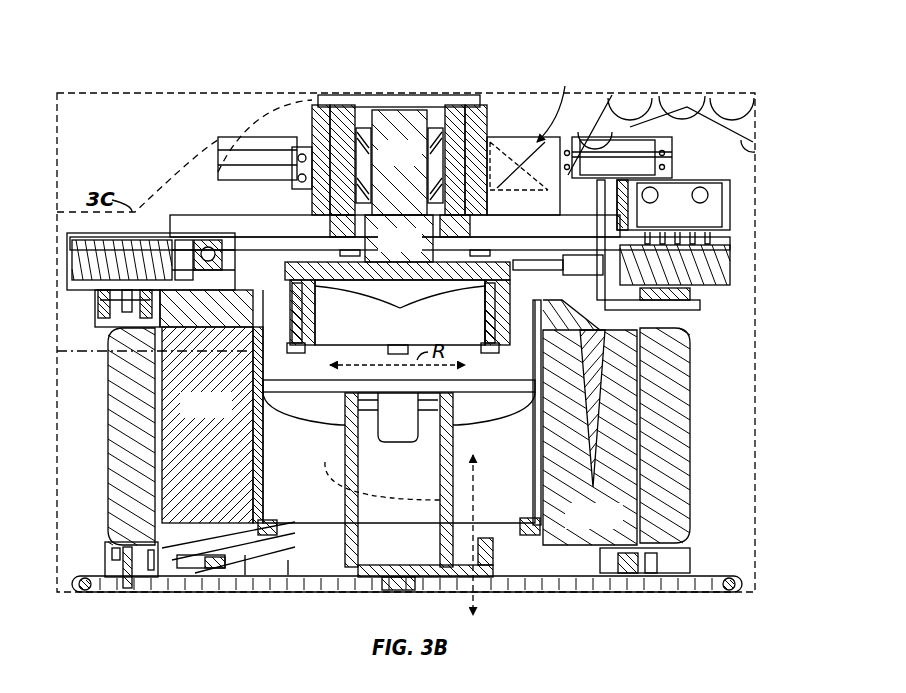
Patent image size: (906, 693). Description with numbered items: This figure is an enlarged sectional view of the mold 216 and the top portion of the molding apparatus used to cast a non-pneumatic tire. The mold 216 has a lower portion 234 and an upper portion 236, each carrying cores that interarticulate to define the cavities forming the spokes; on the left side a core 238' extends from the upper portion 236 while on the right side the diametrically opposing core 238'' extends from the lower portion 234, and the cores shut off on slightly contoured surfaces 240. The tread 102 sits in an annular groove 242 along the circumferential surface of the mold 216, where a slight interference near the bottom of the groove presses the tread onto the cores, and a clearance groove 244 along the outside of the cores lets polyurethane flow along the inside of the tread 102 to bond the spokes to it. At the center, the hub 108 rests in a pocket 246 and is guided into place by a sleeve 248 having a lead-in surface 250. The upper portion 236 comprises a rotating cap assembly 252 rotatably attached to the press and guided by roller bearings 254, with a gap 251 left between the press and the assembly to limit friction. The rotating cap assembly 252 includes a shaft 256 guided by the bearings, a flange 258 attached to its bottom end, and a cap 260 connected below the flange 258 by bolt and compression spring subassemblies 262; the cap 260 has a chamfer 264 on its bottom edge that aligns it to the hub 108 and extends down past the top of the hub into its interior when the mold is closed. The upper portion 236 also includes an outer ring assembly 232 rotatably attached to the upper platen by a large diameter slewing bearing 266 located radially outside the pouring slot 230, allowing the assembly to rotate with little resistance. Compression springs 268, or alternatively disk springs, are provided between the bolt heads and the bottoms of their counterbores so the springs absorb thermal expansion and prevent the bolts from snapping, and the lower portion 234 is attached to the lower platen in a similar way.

The tread 102 is at (104, 412).
The hub 108 is at (250, 482).
The mold 216 is at (642, 428).
The pouring slot 230 is at (306, 325).
The outer ring assembly 232 is at (152, 362).
The lower portion 234 is at (660, 553).
The upper portion 236 is at (690, 310).
The core 238' is at (207, 425).
The core 238'' is at (590, 422).
The contoured surfaces 240 is at (695, 298).
The annular groove 242 is at (110, 340).
The clearance groove 244 is at (162, 493).
The pocket 246 is at (487, 526).
The sleeve 248 is at (420, 550).
The lead-in surface 250 is at (455, 405).
The gap 251 is at (276, 236).
The rotating cap assembly 252 is at (422, 166).
The roller bearings 254 is at (358, 180).
The shaft 256 is at (422, 252).
The flange 258 is at (513, 264).
The cap 260 is at (530, 330).
The bolt and compression spring subassemblies 262 is at (424, 336).
The chamfer 264 is at (376, 367).
The slewing bearing 266 is at (208, 244).
The compression springs 268 is at (97, 312).